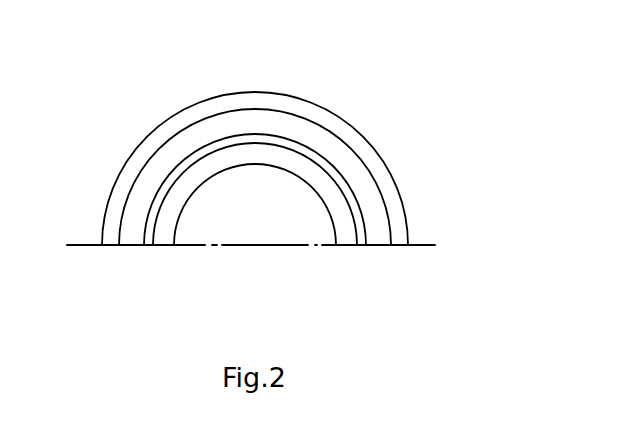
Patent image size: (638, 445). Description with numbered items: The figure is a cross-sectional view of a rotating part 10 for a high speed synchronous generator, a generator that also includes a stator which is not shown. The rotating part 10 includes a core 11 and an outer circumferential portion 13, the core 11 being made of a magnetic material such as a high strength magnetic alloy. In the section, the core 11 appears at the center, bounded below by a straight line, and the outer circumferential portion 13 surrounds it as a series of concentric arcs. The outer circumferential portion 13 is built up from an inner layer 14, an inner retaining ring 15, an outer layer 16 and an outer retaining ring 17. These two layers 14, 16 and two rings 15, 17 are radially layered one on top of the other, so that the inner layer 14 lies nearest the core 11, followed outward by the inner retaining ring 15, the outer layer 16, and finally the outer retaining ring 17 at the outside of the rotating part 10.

The rotating part 10 is at (333, 102).
The core 11 is at (205, 233).
The outer circumferential portion 13 is at (361, 247).
The inner layer 14 is at (310, 170).
The inner retaining ring 15 is at (338, 180).
The outer layer 16 is at (367, 195).
The outer retaining ring 17 is at (397, 225).